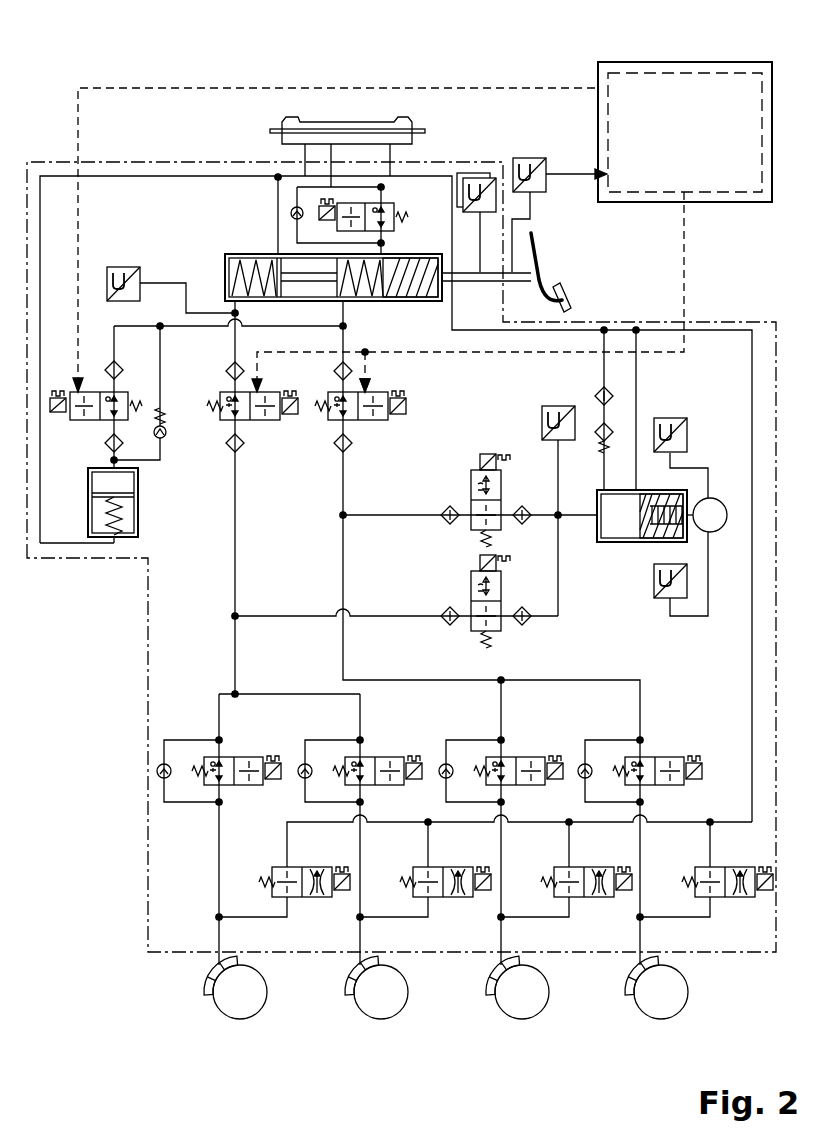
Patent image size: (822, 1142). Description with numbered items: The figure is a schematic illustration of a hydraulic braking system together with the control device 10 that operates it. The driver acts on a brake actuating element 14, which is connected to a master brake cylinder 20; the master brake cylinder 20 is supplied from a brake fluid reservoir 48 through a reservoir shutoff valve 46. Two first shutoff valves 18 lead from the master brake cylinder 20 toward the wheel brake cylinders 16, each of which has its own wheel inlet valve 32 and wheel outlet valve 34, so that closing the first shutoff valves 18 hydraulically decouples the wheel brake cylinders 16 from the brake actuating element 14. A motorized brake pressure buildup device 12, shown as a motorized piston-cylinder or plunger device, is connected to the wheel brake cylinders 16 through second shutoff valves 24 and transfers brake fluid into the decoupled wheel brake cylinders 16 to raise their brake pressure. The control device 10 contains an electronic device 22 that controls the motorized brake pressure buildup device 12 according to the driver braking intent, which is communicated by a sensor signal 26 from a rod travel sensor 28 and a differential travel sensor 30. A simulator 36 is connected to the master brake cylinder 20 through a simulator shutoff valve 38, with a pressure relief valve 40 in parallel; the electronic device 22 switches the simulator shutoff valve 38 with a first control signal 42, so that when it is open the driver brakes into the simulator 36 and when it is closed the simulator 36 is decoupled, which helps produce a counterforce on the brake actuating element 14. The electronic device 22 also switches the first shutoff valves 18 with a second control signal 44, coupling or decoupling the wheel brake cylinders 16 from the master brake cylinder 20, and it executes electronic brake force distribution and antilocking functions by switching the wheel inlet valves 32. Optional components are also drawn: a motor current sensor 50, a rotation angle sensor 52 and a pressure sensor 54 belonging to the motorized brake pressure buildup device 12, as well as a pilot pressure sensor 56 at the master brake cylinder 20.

The control device 10 is at (725, 62).
The motorized brake pressure buildup device 12 is at (726, 500).
The brake actuating element 14 is at (540, 250).
The wheel brake cylinder 16 is at (267, 1003).
The first shutoff valve 18 is at (273, 422).
The master brake cylinder 20 is at (386, 302).
The electronic device 22 is at (668, 73).
The second shutoff valve 24 is at (471, 478).
The sensor signal 26 is at (566, 174).
The rod travel sensor 28 is at (530, 158).
The differential travel sensor 30 is at (476, 178).
The wheel inlet valve 32 is at (229, 756).
The wheel outlet valve 34 is at (311, 898).
The simulator 36 is at (134, 530).
The simulator shutoff valve 38 is at (97, 392).
The pressure relief valve 40 is at (163, 429).
The first control signal 42 is at (160, 88).
The second control signal 44 is at (684, 243).
The reservoir shutoff valve 46 is at (396, 228).
The brake fluid reservoir 48 is at (339, 117).
The motor current sensor 50 is at (665, 598).
The rotation angle sensor 52 is at (670, 418).
The pressure sensor 54 is at (542, 416).
The pilot pressure sensor 56 is at (124, 267).